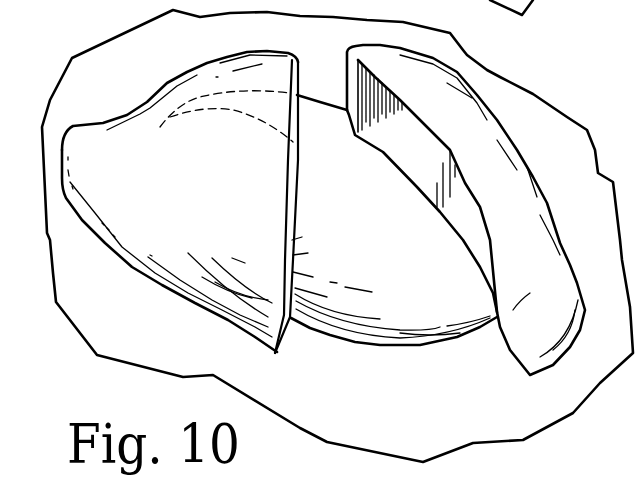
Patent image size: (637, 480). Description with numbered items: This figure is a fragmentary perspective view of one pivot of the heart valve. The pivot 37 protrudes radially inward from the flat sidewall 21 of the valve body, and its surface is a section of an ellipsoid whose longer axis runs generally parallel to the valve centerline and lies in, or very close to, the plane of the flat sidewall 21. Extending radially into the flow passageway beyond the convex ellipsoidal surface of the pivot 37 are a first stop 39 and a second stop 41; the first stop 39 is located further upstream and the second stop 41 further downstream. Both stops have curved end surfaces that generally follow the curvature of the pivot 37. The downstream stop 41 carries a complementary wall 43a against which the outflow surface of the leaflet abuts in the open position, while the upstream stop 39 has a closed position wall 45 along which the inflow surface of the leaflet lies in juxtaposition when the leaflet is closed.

The flat sidewall 21 is at (150, 79).
The pivot 37 is at (374, 249).
The first stop 39 is at (212, 194).
The second stop 41 is at (503, 238).
The complementary wall 43a is at (370, 89).
The closed position wall 45 is at (296, 178).